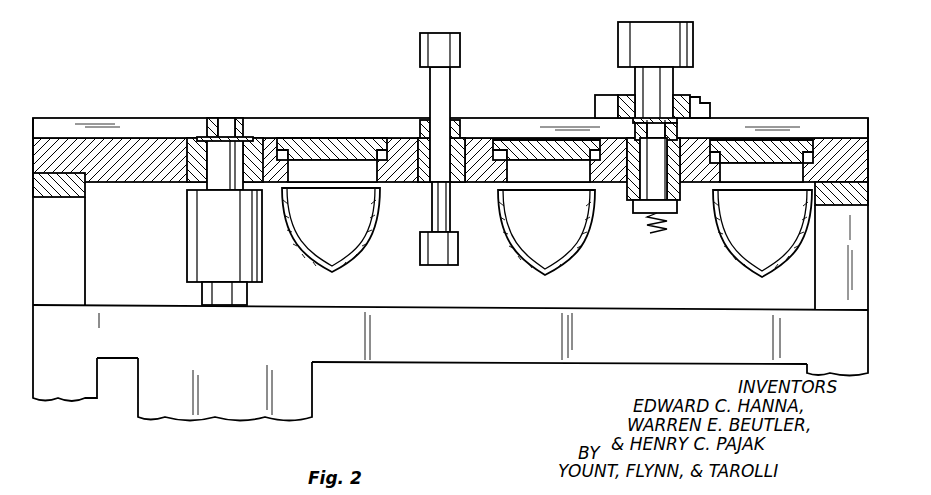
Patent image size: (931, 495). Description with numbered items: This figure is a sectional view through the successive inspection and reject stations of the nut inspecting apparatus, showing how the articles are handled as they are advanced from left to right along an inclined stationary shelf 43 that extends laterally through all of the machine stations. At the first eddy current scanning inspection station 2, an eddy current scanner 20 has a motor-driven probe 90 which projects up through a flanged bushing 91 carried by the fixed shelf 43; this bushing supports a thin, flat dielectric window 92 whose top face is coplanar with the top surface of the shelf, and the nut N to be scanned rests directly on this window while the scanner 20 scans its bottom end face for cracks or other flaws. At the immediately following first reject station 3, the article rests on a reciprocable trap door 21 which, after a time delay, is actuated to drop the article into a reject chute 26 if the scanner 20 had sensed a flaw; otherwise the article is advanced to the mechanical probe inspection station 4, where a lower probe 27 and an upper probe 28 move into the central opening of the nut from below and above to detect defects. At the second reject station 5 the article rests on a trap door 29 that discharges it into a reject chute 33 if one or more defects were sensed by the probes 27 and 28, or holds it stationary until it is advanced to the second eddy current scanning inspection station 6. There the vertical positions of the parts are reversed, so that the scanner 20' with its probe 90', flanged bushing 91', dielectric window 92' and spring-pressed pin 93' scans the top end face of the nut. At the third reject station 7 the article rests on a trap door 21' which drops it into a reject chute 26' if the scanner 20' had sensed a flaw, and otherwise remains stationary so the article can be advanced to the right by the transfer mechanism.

The first eddy current scanning inspection station 2 is at (216, 112).
The first reject station 3 is at (325, 112).
The mechanical probe inspection station 4 is at (418, 112).
The second reject station 5 is at (538, 112).
The second eddy current scanning inspection station 6 is at (620, 90).
The third reject station 7 is at (765, 112).
The nut N is at (243, 125).
The eddy current scanner 20 is at (197, 247).
The eddy current scanner 20' is at (675, 44).
The trap door 21 is at (332, 135).
The trap door 21' is at (773, 139).
The reject chute 26 is at (331, 240).
The reject chute 26' is at (759, 246).
The lower probe 27 is at (452, 215).
The upper probe 28 is at (452, 92).
The trap door 29 is at (520, 150).
The reject chute 33 is at (568, 262).
The inclined stationary shelf 43 is at (117, 170).
The motor-driven probe 90 is at (197, 189).
The motor-driven probe 90' is at (680, 93).
The flanged bushing 91 is at (172, 137).
The flanged bushing 91' is at (601, 92).
The dielectric window 92 is at (267, 136).
The dielectric window 92' is at (710, 106).
The spring-pressed pin 93' is at (640, 186).